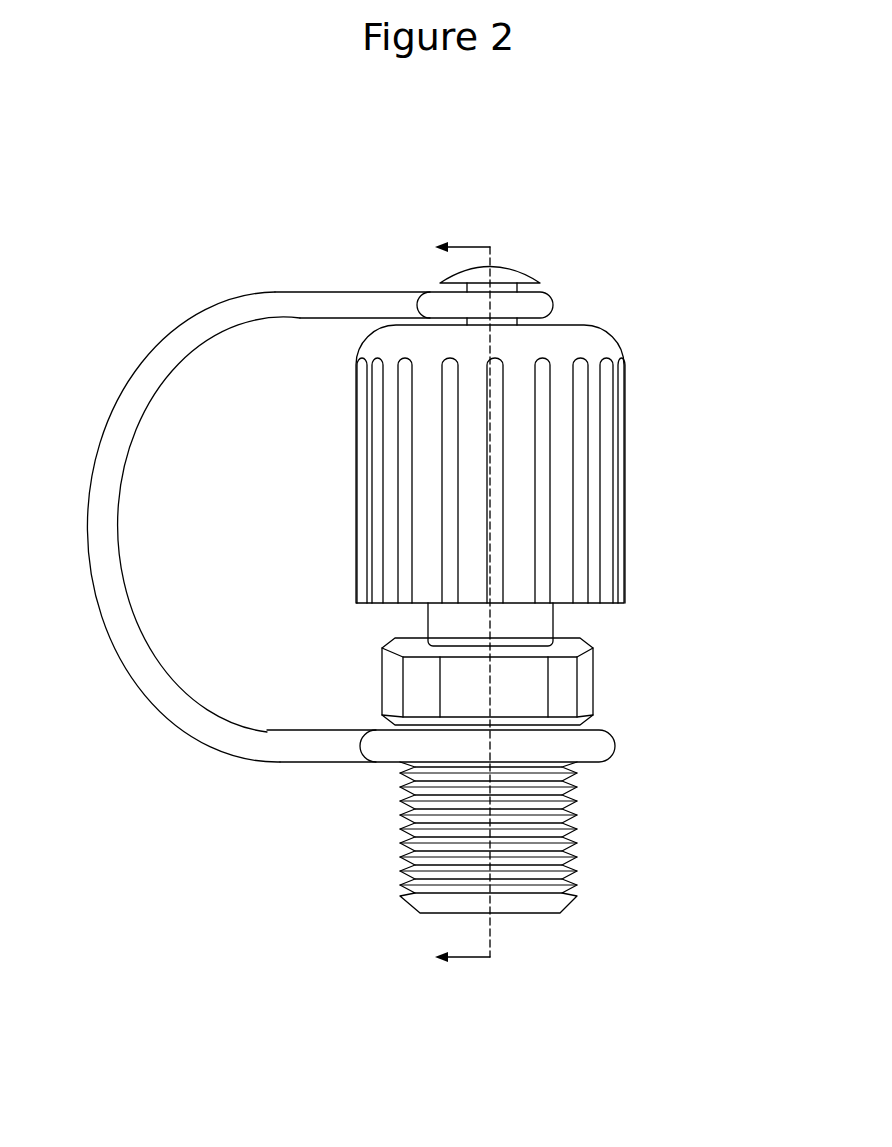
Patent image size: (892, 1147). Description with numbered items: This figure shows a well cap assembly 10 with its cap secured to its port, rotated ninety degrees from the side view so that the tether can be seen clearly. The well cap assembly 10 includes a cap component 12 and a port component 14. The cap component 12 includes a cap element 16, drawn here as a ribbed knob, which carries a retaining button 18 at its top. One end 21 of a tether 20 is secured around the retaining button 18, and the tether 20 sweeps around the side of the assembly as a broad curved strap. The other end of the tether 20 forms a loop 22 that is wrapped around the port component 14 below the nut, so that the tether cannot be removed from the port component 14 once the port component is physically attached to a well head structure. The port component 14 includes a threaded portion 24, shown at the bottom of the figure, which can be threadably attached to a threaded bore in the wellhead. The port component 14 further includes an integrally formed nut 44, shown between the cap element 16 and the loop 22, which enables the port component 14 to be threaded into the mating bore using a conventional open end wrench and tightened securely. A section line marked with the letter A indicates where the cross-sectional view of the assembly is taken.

The well cap assembly 10 is at (288, 200).
The cap component 12 is at (628, 503).
The port component 14 is at (350, 688).
The cap element 16 is at (403, 465).
The retaining button 18 is at (512, 277).
The tether 20 is at (105, 517).
The end of tether 21 is at (545, 307).
The loop 22 is at (417, 752).
The threaded portion 24 is at (547, 858).
The nut 44 is at (588, 682).